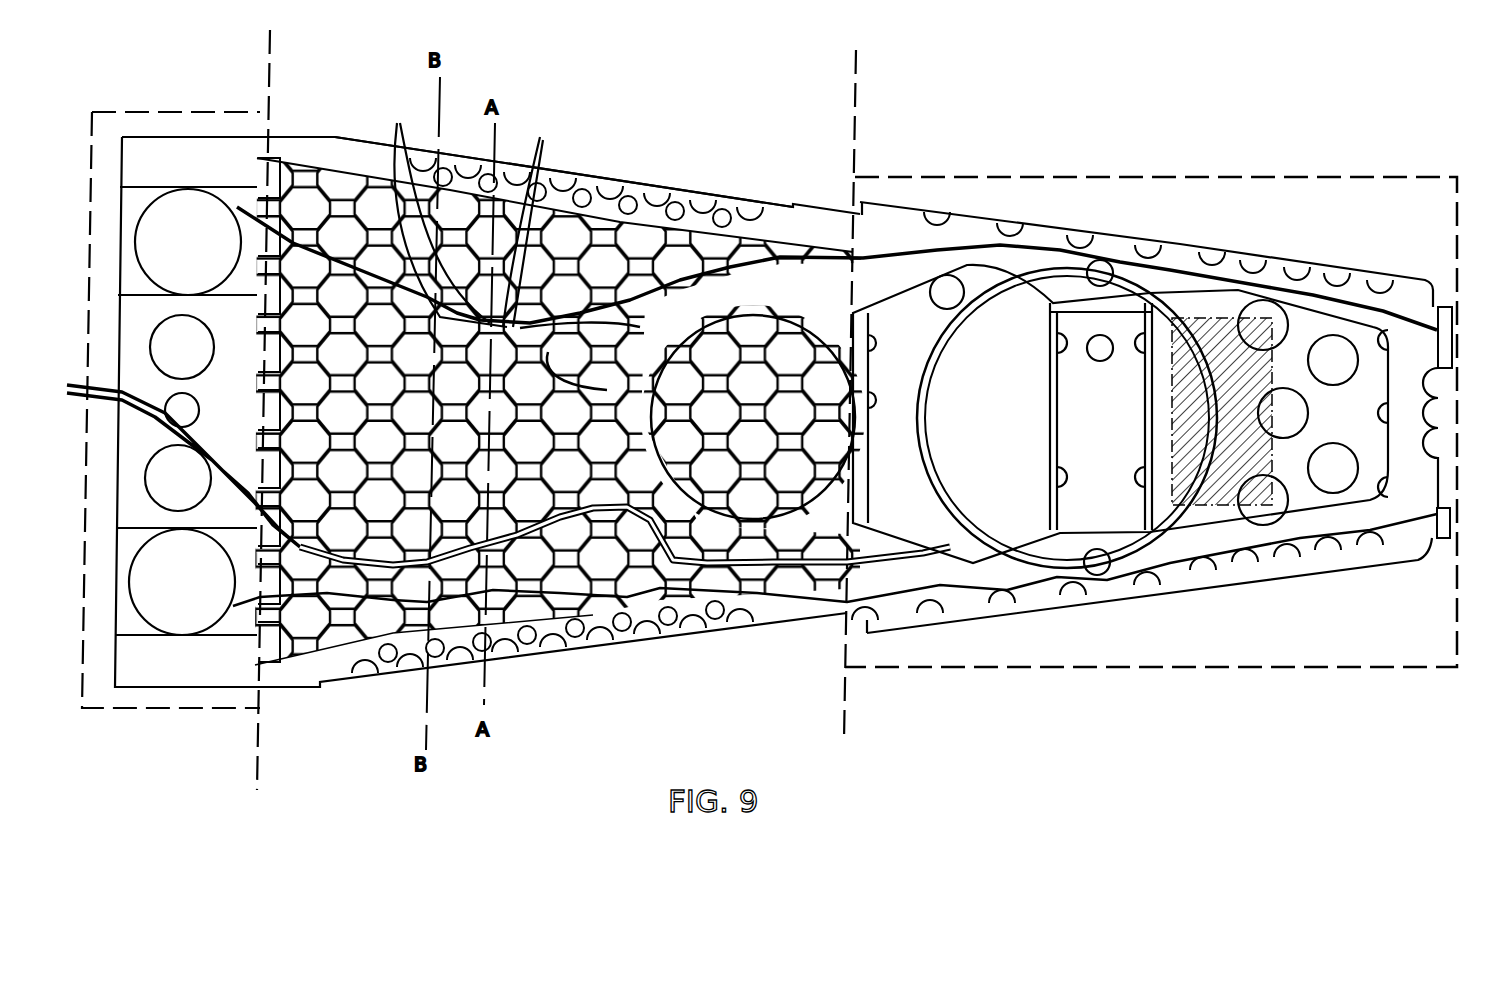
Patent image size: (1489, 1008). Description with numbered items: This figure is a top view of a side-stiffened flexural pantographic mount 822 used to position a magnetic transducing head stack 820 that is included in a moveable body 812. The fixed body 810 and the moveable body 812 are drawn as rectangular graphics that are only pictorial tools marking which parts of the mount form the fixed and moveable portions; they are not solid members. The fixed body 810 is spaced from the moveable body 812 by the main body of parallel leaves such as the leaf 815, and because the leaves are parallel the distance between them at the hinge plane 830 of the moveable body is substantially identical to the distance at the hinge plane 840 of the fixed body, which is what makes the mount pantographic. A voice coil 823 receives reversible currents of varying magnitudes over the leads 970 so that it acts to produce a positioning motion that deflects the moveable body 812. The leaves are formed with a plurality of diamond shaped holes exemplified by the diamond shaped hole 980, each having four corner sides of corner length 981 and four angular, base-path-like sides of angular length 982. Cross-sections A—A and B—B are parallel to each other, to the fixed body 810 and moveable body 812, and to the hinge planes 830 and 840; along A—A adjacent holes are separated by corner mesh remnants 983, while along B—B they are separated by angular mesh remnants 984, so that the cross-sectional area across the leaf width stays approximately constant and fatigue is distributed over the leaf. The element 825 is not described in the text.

The fixed body 810 is at (150, 110).
The moveable body 812 is at (1128, 170).
The first leaf 815 is at (782, 210).
The magnetic transducing head stack 820 is at (1451, 302).
The side-stiffened flexural pantographic mount 822 is at (684, 124).
The voice coil 823 is at (973, 533).
The edge with holes 825 is at (605, 173).
The hinge plane of the moveable body 830 is at (857, 88).
The hinge plane of the fixed body 840 is at (273, 63).
The leads 970 is at (607, 500).
The diamond shaped hole 980 is at (585, 368).
The corner length 981 is at (640, 327).
The angular length 982 is at (607, 390).
The corner mesh remnants 983 is at (536, 219).
The angular mesh remnants 984 is at (442, 210).